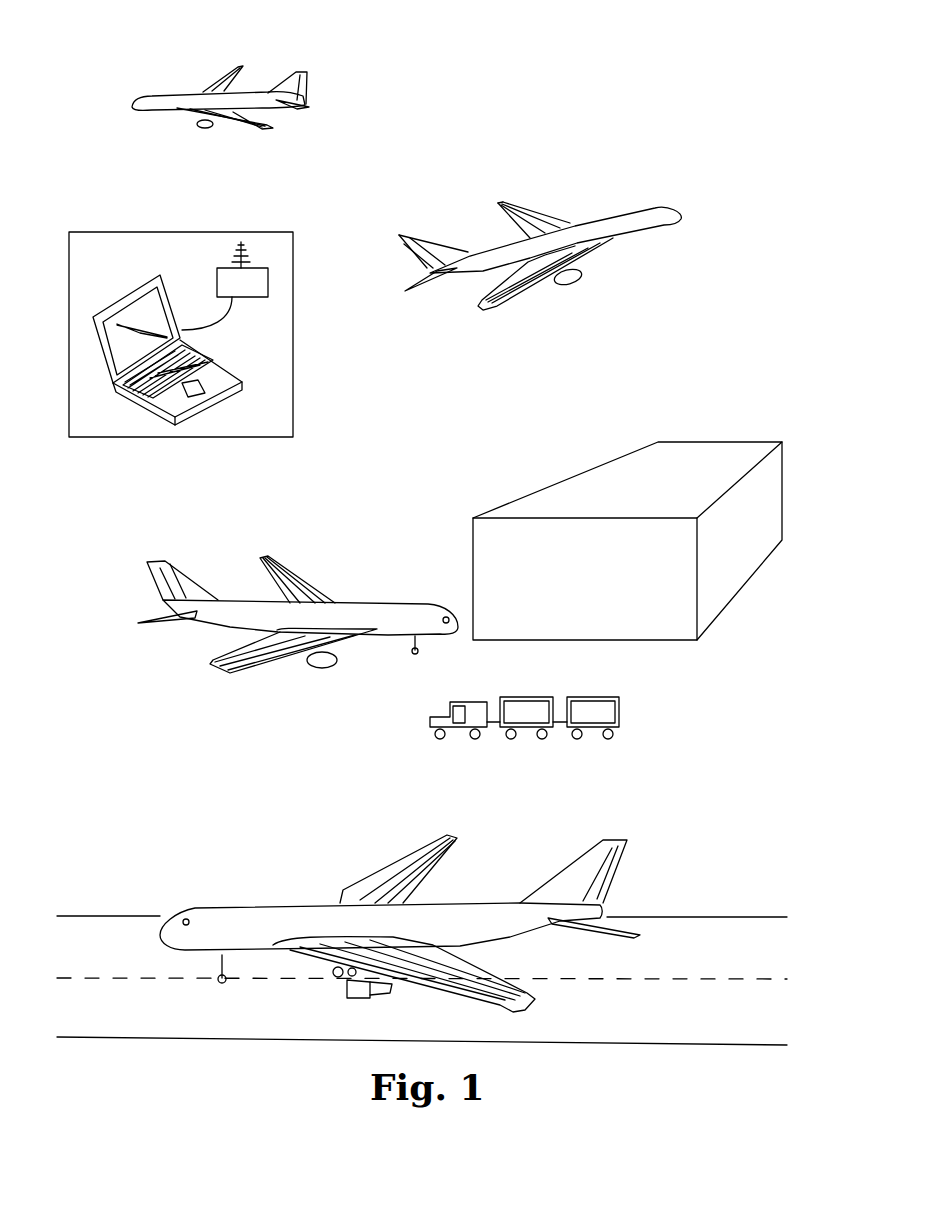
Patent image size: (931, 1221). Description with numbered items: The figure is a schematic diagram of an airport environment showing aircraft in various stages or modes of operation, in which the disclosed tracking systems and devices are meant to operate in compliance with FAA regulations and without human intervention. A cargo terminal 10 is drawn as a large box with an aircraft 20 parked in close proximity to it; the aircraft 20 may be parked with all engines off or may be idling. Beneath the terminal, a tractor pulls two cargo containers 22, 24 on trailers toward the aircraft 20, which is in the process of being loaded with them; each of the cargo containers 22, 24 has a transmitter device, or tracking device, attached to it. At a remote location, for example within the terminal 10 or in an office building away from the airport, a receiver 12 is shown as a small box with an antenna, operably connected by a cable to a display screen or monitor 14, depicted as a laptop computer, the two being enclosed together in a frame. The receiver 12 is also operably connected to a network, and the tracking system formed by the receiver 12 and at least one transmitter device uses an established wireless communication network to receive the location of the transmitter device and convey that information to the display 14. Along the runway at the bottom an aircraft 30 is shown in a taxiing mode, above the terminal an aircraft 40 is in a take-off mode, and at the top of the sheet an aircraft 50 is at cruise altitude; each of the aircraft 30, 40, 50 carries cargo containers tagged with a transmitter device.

The cargo terminal 10 is at (557, 484).
The receiver 12 is at (255, 298).
The display screen or monitor 14 is at (114, 301).
The aircraft 20 is at (234, 560).
The cargo container 22 is at (525, 697).
The cargo container 24 is at (590, 697).
The aircraft in taxiing mode 30 is at (647, 842).
The aircraft in take-off mode 40 is at (459, 209).
The aircraft at cruise altitude 50 is at (152, 77).